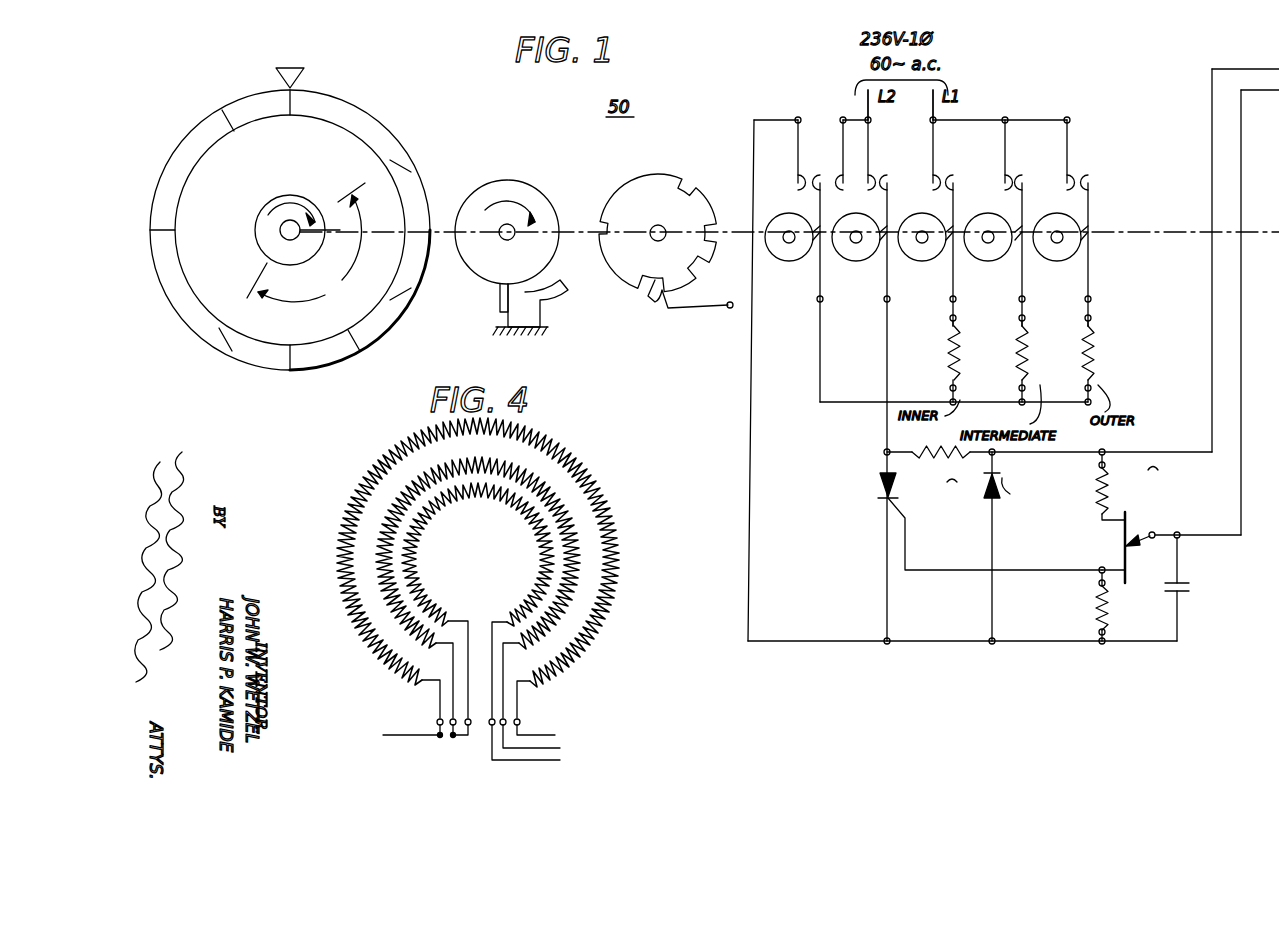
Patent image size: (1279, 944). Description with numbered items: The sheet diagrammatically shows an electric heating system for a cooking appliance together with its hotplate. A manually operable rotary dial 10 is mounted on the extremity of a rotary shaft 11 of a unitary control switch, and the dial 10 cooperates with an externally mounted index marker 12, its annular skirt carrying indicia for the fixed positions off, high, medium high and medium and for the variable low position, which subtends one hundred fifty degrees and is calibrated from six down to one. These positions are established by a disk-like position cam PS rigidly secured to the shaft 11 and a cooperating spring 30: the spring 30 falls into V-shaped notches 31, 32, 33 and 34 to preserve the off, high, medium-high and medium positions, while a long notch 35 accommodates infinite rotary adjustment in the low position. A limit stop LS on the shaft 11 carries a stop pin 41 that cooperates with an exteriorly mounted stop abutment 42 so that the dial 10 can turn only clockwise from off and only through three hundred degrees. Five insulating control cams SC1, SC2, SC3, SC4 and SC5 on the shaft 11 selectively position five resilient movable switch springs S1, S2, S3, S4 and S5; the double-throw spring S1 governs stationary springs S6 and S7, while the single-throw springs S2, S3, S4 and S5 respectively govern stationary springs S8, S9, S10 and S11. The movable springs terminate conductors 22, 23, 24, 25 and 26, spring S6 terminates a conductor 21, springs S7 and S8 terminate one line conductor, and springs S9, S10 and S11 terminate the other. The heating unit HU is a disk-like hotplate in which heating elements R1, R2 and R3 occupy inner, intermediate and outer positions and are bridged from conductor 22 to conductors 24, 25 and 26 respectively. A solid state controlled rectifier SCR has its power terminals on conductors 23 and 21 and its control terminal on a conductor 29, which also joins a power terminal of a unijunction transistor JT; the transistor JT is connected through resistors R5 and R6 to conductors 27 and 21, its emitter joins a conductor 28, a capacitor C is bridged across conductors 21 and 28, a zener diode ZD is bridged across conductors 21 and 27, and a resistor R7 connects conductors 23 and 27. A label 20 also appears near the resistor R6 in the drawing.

In FIG. 1, the rotary dial 10 is at (190, 316).
In FIG. 1, the rotary shaft 11 is at (445, 240).
In FIG. 1, the index marker 12 is at (300, 74).
In FIG. 1, the limit stop LS is at (512, 188).
In FIG. 1, the stop pin 41 is at (500, 305).
In FIG. 1, the stop abutment 42 is at (528, 311).
In FIG. 1, the position cam PS is at (652, 190).
In FIG. 1, the spring 30 is at (682, 308).
In FIG. 1, the V-shaped notch 31 is at (656, 280).
In FIG. 1, the V-shaped notch 32 is at (686, 274).
In FIG. 1, the V-shaped notch 33 is at (666, 233).
In FIG. 1, the V-shaped notch 34 is at (702, 225).
In FIG. 1, the long notch 35 is at (600, 217).
In FIG. 1, the movable switch spring S1 is at (815, 196).
In FIG. 1, the movable switch spring S2 is at (888, 200).
In FIG. 1, the movable switch spring S3 is at (954, 200).
In FIG. 1, the movable switch spring S4 is at (1023, 200).
In FIG. 1, the movable switch spring S5 is at (1089, 200).
In FIG. 1, the stationary switch spring S6 is at (795, 162).
In FIG. 1, the stationary switch spring S7 is at (843, 164).
In FIG. 1, the stationary switch spring S8 is at (869, 164).
In FIG. 1, the stationary switch spring S9 is at (934, 164).
In FIG. 1, the stationary switch spring S10 is at (1006, 164).
In FIG. 1, the stationary switch spring S11 is at (1068, 164).
In FIG. 1, the insulating control cam SC1 is at (780, 258).
In FIG. 1, the insulating control cam SC2 is at (848, 258).
In FIG. 1, the insulating control cam SC3 is at (914, 258).
In FIG. 1, the insulating control cam SC4 is at (980, 258).
In FIG. 1, the insulating control cam SC5 is at (1049, 258).
In FIG. 1, the conductor 21 is at (752, 342).
In FIG. 1, the conductor 22 is at (820, 342).
In FIG. 1, the conductor 23 is at (887, 342).
In FIG. 4, the conductor 23 is at (412, 735).
In FIG. 1, the conductor 24 is at (955, 305).
In FIG. 4, the conductor 24 is at (560, 760).
In FIG. 1, the conductor 25 is at (1024, 305).
In FIG. 4, the conductor 25 is at (560, 748).
In FIG. 1, the conductor 26 is at (1090, 305).
In FIG. 4, the conductor 26 is at (555, 735).
In FIG. 1, the conductor 27 is at (1208, 436).
In FIG. 1, the conductor 28 is at (1241, 452).
In FIG. 1, the conductor 29 is at (950, 566).
In FIG. 1, the conductor 20 is at (1106, 604).
In FIG. 1, the heating element R1 is at (948, 358).
In FIG. 4, the heating element R1 is at (540, 527).
In FIG. 1, the heating element R2 is at (1016, 358).
In FIG. 4, the heating element R2 is at (578, 535).
In FIG. 1, the heating element R3 is at (1082, 358).
In FIG. 4, the heating element R3 is at (600, 575).
In FIG. 1, the resistor R5 is at (1096, 490).
In FIG. 1, the resistor R6 is at (1096, 606).
In FIG. 1, the resistor R7 is at (930, 447).
In FIG. 1, the electric heating unit HU is at (1150, 355).
In FIG. 1, the solid state controlled rectifier SCR is at (878, 483).
In FIG. 1, the zener diode ZD is at (1000, 480).
In FIG. 1, the unijunction transistor JT is at (1159, 547).
In FIG. 1, the capacitor C is at (1185, 582).